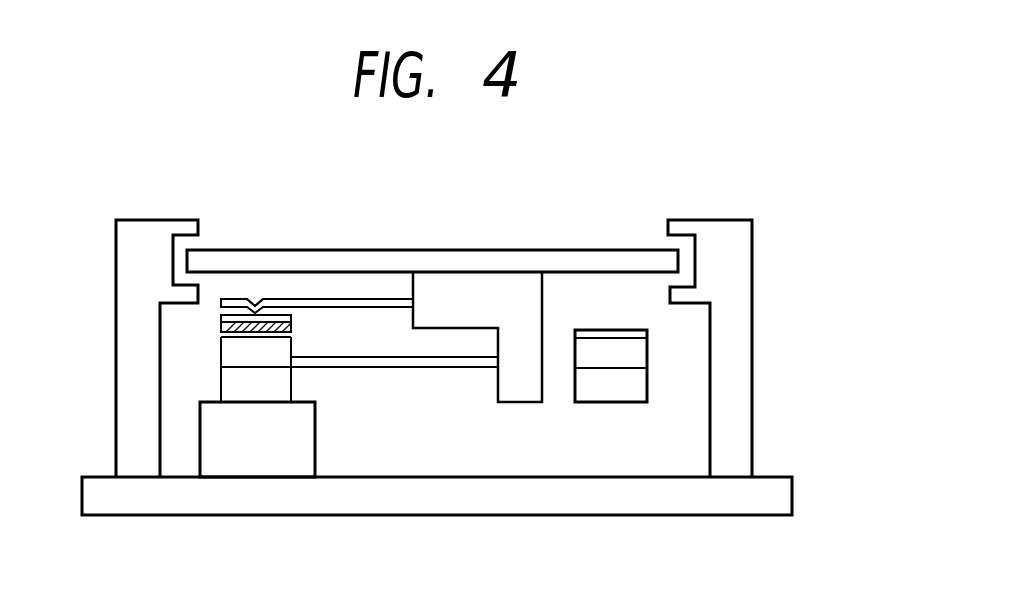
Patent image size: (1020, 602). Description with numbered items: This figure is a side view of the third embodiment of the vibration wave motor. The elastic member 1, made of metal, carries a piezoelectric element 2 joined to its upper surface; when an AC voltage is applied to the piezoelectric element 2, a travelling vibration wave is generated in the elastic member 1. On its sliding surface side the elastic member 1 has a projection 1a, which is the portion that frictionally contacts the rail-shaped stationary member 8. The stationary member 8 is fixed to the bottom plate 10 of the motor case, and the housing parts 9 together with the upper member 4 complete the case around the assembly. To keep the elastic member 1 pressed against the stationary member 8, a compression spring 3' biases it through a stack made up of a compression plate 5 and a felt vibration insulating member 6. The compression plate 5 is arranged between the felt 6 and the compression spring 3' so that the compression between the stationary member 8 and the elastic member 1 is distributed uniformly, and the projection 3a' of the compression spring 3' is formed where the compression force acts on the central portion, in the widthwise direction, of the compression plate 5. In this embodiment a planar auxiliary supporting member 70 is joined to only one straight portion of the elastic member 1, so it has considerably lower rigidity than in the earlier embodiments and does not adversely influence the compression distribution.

The elastic member 1 is at (640, 353).
The projection 1a is at (618, 392).
The piezoelectric element 2 is at (613, 331).
The compression spring 3' is at (317, 249).
The projection of the compression spring 3a' is at (265, 240).
The top plate 4 is at (497, 250).
The compression plate 5 is at (221, 317).
The vibration insulating member 6 is at (221, 327).
The rail-shaped stationary member 8 is at (280, 463).
The housing frame 9 is at (740, 254).
The bottom plate 10 is at (715, 502).
The planar auxiliary supporting member 70 is at (425, 362).